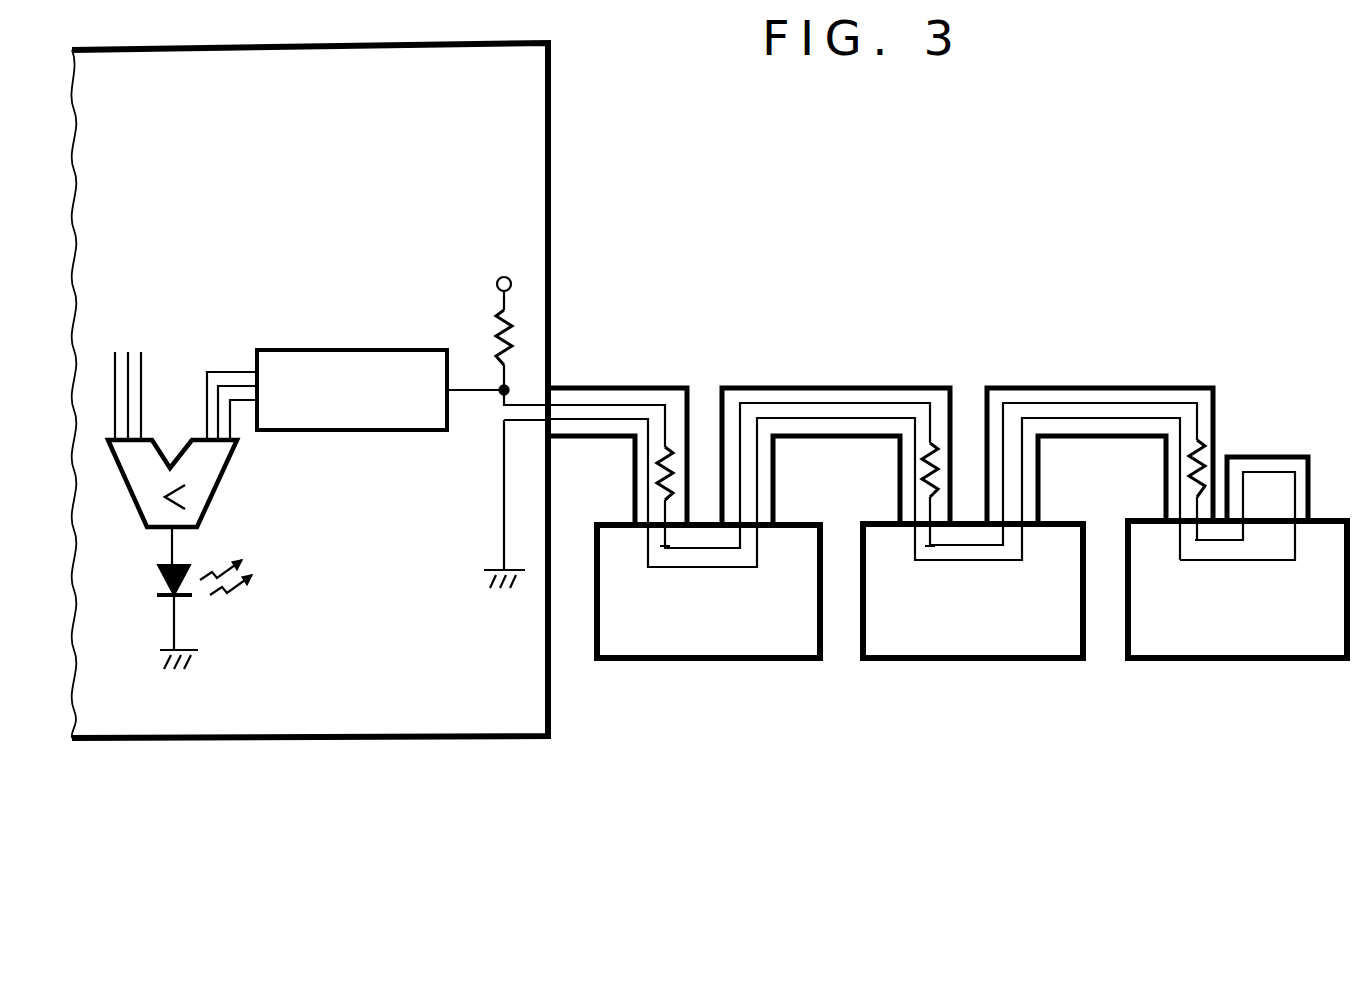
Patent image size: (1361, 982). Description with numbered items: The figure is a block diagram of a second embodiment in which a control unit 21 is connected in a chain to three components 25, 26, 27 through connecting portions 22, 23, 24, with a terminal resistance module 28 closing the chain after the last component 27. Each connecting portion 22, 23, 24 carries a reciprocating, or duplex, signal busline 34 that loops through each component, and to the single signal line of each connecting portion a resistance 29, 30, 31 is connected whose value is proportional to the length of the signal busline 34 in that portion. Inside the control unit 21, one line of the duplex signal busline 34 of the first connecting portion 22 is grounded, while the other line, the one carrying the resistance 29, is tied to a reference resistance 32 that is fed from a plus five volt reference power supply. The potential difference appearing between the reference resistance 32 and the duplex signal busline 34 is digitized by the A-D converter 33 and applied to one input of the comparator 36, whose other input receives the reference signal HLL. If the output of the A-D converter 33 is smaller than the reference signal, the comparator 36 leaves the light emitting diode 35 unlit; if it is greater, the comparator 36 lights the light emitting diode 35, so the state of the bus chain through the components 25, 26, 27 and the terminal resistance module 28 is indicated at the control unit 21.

The control unit 21 is at (551, 96).
The connecting portion 22 is at (610, 387).
The connecting portion 23 is at (852, 388).
The connecting portion 24 is at (1098, 385).
The component 25 is at (733, 660).
The component 26 is at (1010, 660).
The component 27 is at (1275, 660).
The terminal resistance module 28 is at (1298, 455).
The resistance 29 is at (672, 465).
The resistance 30 is at (942, 465).
The resistance 31 is at (1205, 452).
The reference resistance 32 is at (512, 322).
The A-D converter 33 is at (386, 348).
The duplex signal busline 34 is at (660, 552).
The light emitting diode 35 is at (160, 577).
The comparator 36 is at (213, 499).